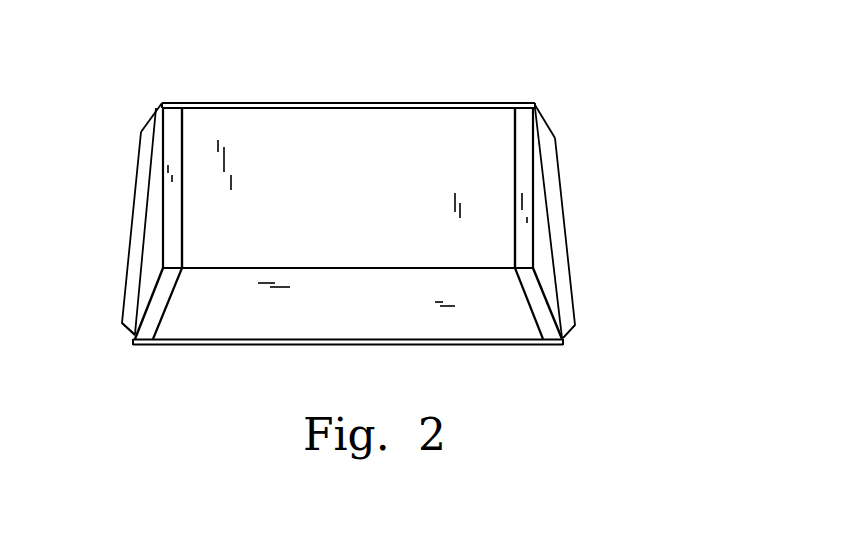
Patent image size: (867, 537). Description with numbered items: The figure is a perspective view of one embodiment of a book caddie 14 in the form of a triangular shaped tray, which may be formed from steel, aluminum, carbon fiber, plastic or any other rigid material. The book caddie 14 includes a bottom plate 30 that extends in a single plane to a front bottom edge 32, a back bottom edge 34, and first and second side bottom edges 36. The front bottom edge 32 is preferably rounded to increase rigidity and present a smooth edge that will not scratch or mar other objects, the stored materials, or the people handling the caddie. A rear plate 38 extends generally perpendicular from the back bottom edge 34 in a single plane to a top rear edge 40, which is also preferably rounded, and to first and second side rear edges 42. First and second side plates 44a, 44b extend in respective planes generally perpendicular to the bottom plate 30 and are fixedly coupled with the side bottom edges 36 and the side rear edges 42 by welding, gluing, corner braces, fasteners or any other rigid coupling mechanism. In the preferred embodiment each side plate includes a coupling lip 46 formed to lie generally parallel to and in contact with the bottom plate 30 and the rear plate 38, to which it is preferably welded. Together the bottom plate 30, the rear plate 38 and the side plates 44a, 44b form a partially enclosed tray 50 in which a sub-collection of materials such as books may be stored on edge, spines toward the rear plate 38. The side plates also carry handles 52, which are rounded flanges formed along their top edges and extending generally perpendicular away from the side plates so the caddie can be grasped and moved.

The book caddie 14 is at (705, 74).
The bottom plate 30 is at (358, 310).
The front bottom edge 32 is at (372, 342).
The back bottom edge 34 is at (389, 268).
The side bottom edges 36 is at (147, 312).
The rear plate 38 is at (363, 190).
The top rear edge 40 is at (360, 104).
The side rear edges 42 is at (163, 188).
The first side plate 44a is at (155, 238).
The second side plate 44b is at (545, 242).
The coupling lip 46 is at (170, 131).
The partially enclosed tray 50 is at (438, 326).
The handles 52 is at (143, 158).